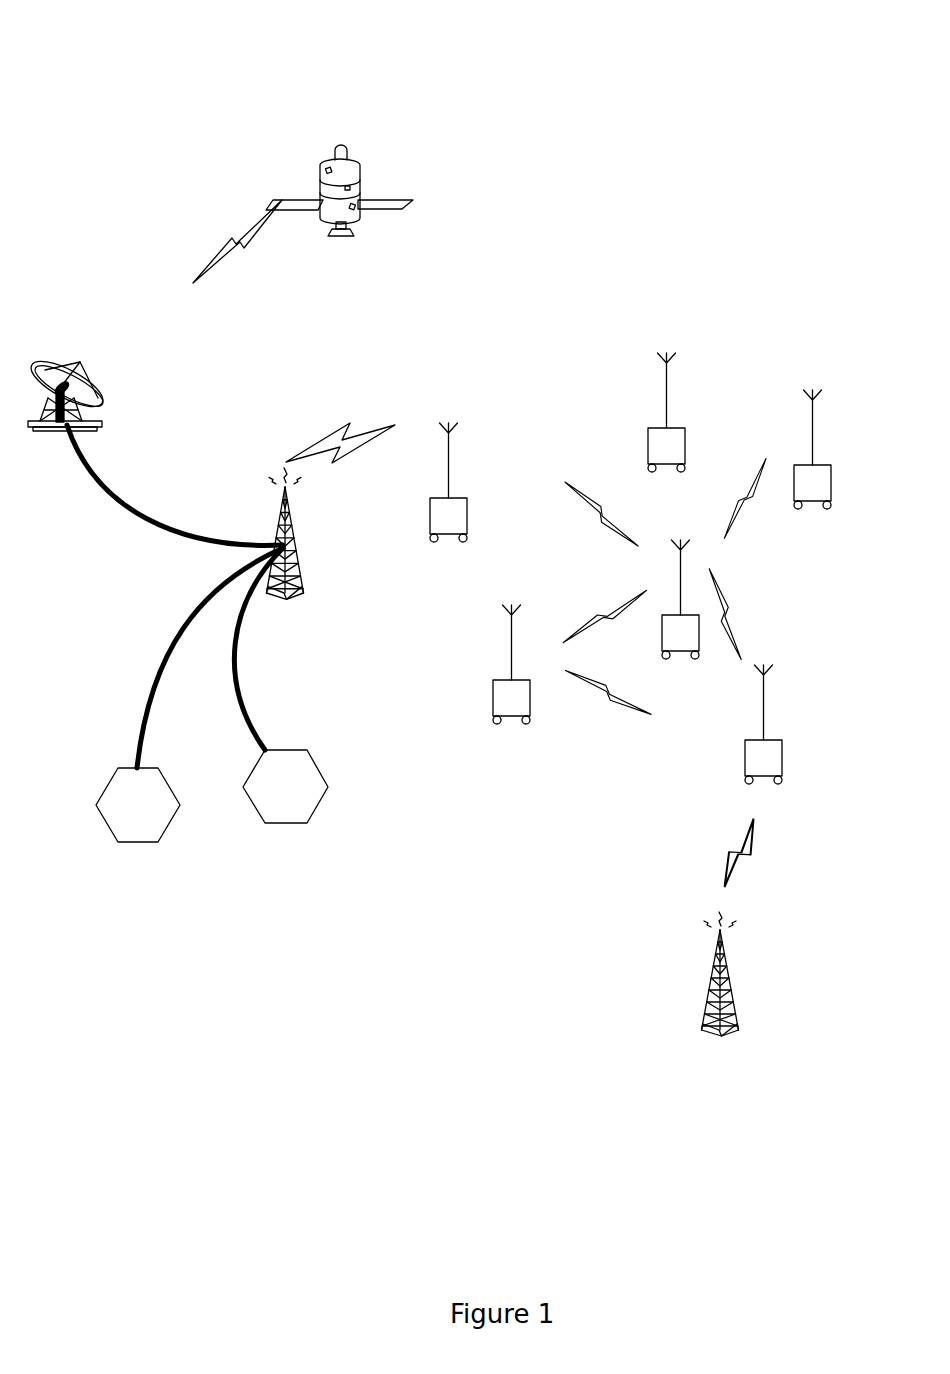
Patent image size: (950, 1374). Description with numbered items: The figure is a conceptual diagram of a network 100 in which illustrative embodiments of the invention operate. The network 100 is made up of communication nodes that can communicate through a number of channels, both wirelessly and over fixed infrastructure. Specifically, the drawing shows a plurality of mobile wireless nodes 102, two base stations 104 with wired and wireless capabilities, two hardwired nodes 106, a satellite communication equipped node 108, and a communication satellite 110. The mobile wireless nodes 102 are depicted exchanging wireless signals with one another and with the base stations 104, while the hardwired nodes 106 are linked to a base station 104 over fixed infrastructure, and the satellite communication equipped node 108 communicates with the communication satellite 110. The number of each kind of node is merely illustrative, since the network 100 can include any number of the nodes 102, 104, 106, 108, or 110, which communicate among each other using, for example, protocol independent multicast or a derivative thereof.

The network 100 is at (180, 63).
The mobile wireless nodes 102 is at (502, 405).
The base stations 104 is at (503, 765).
The hardwired nodes 106 is at (282, 840).
The satellite communication equipped node 108 is at (81, 392).
The communication satellite 110 is at (339, 202).